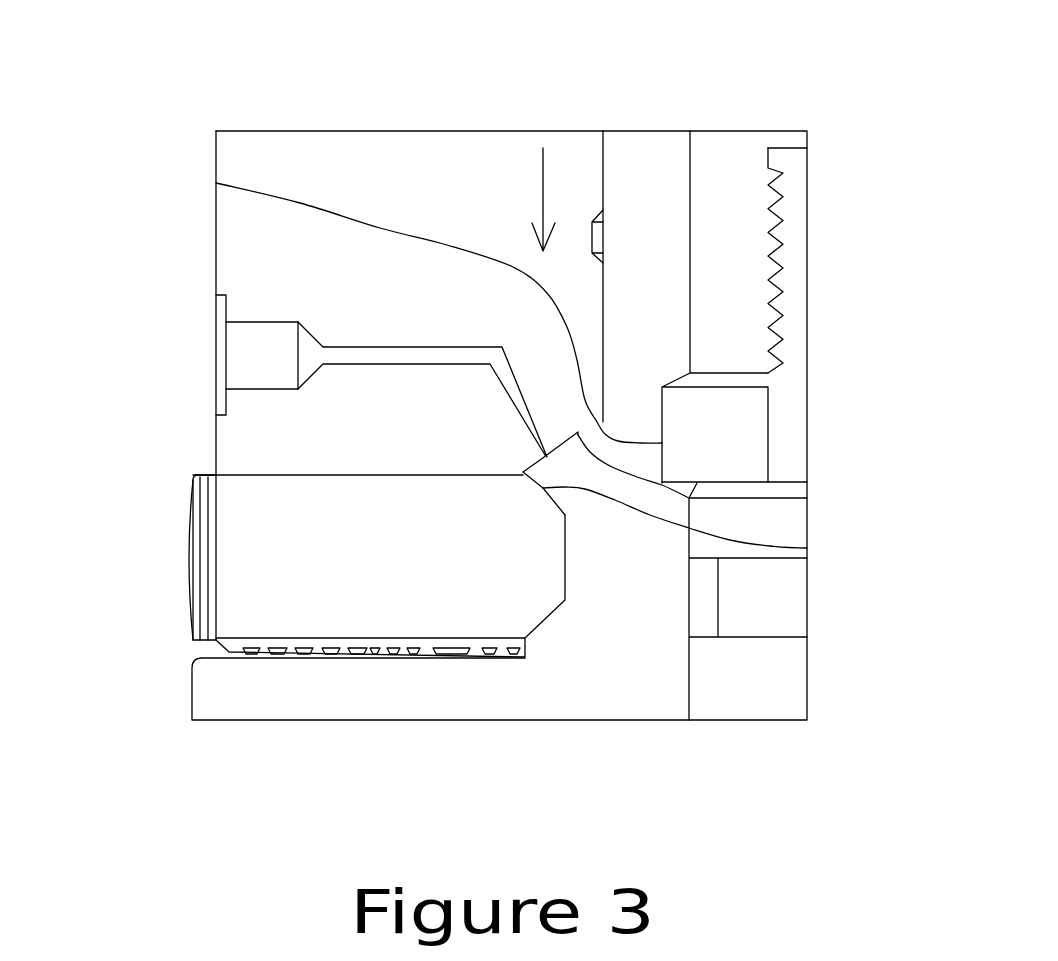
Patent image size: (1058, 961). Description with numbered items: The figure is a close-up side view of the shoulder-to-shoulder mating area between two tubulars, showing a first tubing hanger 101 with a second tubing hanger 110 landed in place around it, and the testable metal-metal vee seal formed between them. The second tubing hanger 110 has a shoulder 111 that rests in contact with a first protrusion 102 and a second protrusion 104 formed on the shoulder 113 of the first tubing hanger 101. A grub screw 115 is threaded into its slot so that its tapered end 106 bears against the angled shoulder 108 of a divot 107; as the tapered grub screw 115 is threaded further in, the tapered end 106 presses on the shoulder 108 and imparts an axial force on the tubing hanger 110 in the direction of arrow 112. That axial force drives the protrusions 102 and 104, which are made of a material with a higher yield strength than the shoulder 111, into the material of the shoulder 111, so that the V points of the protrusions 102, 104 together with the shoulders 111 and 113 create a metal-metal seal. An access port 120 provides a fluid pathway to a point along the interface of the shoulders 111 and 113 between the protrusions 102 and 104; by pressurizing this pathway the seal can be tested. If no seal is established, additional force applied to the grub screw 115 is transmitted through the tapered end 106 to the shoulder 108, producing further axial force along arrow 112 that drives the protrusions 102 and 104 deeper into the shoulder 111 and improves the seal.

The first tubing hanger 101 is at (625, 608).
The first protrusion 102 is at (540, 460).
The second protrusion 104 is at (807, 482).
The tapered end 106 is at (542, 600).
The divot 107 is at (540, 499).
The shoulder 108 is at (807, 548).
The second tubing hanger 110 is at (440, 180).
The shoulder 111 is at (216, 183).
The arrow 112 is at (543, 200).
The shoulder 113 is at (662, 443).
The grub screw 115 is at (207, 582).
The access port 120 is at (440, 355).